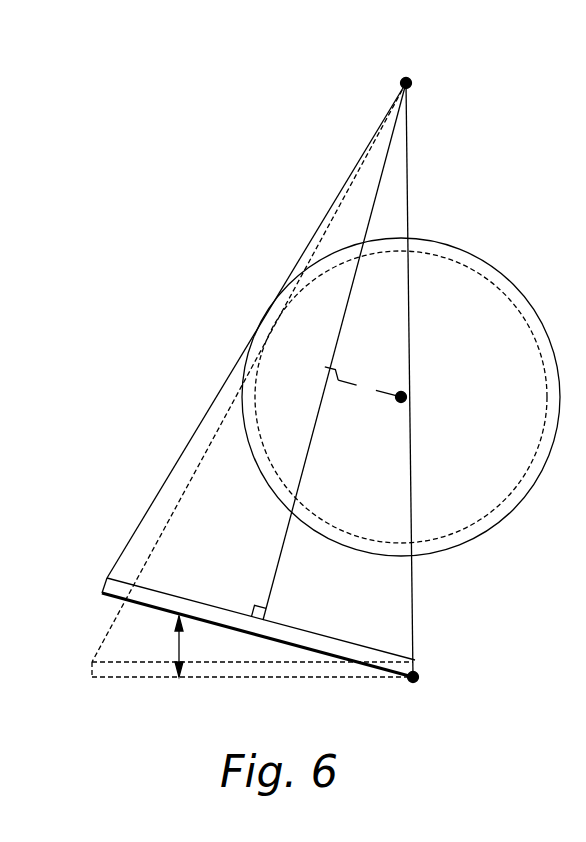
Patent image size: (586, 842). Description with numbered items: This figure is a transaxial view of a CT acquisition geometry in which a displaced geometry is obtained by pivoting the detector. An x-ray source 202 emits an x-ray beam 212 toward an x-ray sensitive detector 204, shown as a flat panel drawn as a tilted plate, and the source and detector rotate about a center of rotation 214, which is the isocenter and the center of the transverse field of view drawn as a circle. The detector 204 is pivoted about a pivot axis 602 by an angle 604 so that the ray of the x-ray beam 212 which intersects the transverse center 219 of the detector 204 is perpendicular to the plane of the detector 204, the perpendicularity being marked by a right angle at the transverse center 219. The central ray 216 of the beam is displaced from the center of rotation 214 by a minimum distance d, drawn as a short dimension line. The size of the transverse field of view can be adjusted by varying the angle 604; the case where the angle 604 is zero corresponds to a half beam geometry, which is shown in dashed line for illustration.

The x-ray source 202 is at (402, 81).
The x-ray beam 212 is at (393, 193).
The central ray 216 is at (340, 330).
The center of rotation 214 is at (401, 401).
The detector transverse center 219 is at (266, 616).
The x-ray sensitive detector 204 is at (231, 624).
The pivot axis 602 is at (413, 681).
The angle 604 is at (176, 645).